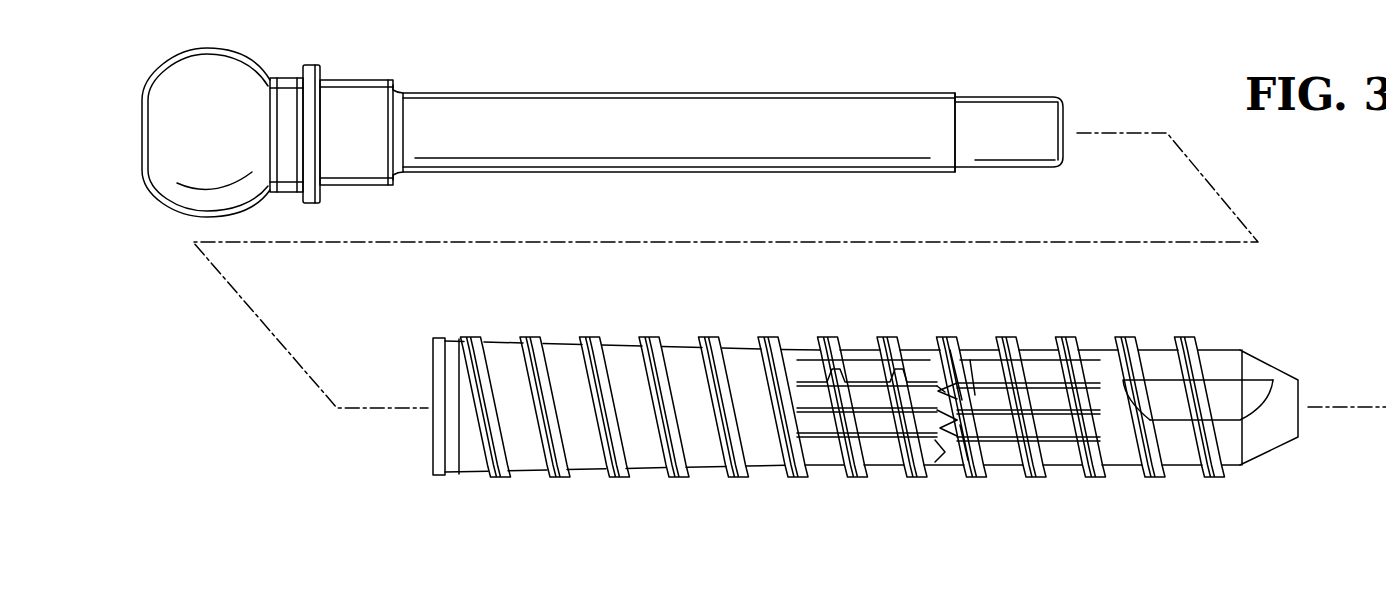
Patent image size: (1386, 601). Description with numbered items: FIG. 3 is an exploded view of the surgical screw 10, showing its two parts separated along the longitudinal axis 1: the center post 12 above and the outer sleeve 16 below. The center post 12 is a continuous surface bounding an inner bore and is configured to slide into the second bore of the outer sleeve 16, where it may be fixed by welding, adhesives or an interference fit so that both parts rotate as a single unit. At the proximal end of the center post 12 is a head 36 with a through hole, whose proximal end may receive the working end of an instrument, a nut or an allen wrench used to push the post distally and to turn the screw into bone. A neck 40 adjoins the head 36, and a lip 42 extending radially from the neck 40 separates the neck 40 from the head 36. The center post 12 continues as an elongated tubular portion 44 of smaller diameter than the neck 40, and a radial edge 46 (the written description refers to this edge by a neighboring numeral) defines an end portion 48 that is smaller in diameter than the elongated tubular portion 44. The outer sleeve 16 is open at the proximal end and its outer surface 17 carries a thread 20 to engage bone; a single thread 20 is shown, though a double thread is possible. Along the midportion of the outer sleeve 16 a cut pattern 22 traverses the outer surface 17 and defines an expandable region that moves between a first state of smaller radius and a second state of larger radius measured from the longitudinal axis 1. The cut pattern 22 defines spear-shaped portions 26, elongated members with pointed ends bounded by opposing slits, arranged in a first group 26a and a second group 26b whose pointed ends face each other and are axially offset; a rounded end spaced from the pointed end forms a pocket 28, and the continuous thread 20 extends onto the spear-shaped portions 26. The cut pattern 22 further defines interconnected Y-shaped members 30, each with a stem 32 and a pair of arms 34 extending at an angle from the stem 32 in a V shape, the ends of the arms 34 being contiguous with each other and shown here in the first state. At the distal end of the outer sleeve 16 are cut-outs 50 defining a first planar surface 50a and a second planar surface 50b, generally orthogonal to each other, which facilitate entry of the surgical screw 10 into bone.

The longitudinal axis 1 is at (1345, 407).
The surgical screw 10 is at (1123, 82).
The center post 12 is at (602, 117).
The outer sleeve 16 is at (502, 335).
The outer surface 17 is at (680, 348).
The thread 20 is at (770, 348).
The cut pattern 22 is at (917, 306).
The spear-shaped portions 26 is at (858, 352).
The first group 26a is at (923, 368).
The second group 26b is at (988, 430).
The pocket 28 is at (937, 397).
The Y-shaped members 30 is at (923, 393).
The stem 32 is at (925, 398).
The arms 34 is at (938, 395).
The head 36 is at (212, 49).
The neck 40 is at (357, 80).
The lip 42 is at (315, 65).
The elongated tubular portion 44 is at (713, 93).
The shoulder 46 is at (955, 95).
The end portion 48 is at (1010, 97).
The cut-outs 50 is at (1227, 385).
The first planar surface 50a is at (1262, 420).
The second planar surface 50b is at (1200, 385).